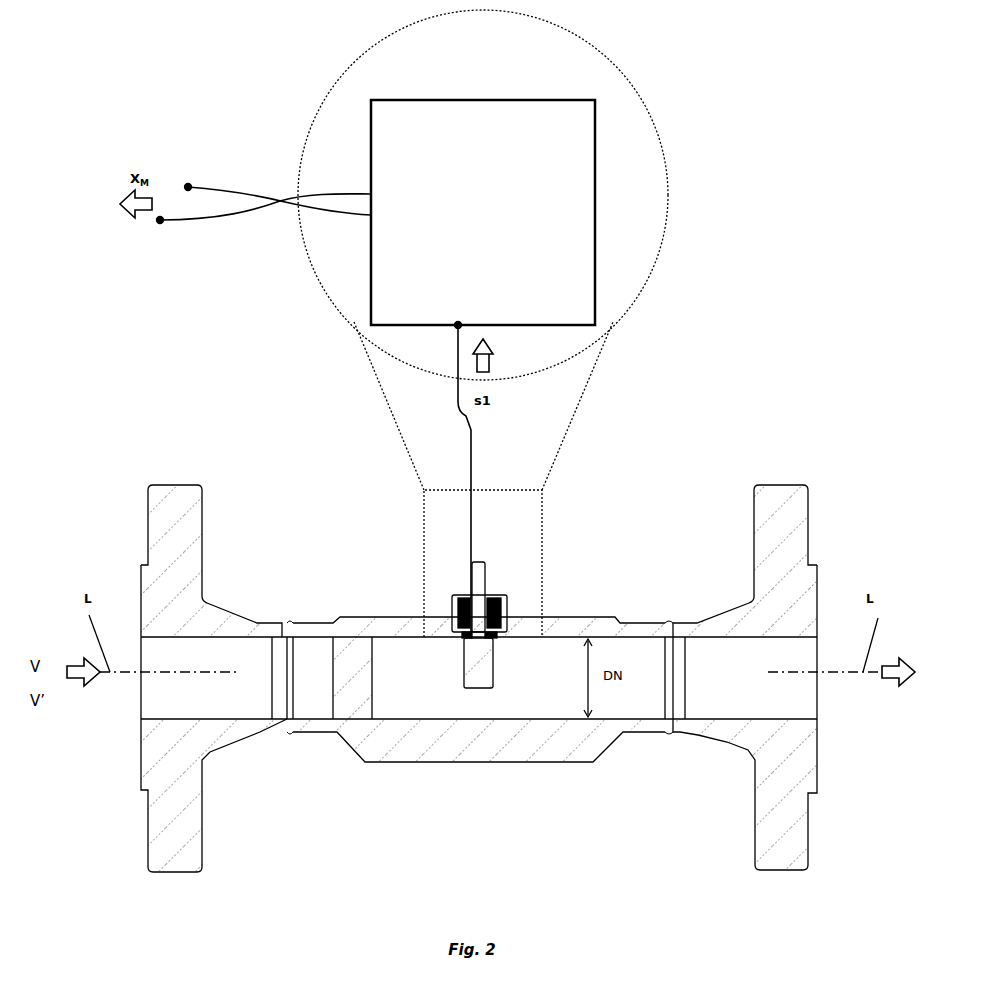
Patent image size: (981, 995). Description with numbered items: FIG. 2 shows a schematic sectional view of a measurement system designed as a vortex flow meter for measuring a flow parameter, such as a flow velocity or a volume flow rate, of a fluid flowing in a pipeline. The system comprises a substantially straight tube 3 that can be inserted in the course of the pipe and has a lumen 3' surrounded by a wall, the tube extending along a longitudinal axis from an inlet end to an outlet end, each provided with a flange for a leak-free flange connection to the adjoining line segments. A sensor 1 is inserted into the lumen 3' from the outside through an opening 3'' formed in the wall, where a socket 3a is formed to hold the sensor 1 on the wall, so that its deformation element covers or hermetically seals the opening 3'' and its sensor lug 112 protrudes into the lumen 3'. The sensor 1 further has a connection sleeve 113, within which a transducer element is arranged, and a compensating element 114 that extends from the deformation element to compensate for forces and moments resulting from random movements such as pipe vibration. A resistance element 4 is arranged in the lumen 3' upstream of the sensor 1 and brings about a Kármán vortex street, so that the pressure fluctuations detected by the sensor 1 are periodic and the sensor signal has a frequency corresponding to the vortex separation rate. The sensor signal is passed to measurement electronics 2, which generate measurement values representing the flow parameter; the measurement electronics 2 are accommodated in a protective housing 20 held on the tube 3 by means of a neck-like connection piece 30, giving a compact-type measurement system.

The sensor 1 is at (438, 596).
The measurement electronics 2 is at (483, 212).
The tube 3 is at (664, 561).
The socket 3a is at (440, 625).
The lumen 3' is at (479, 678).
The opening 3'' is at (522, 721).
The resistance element 4 is at (352, 678).
The protective housing 20 is at (657, 221).
The connection piece 30 is at (550, 500).
The sensor lug 112 is at (478, 675).
The connection sleeve 113 is at (500, 601).
The compensating element 114 is at (480, 578).